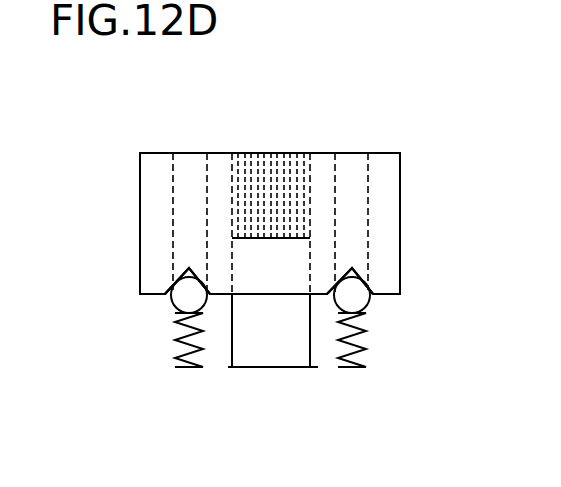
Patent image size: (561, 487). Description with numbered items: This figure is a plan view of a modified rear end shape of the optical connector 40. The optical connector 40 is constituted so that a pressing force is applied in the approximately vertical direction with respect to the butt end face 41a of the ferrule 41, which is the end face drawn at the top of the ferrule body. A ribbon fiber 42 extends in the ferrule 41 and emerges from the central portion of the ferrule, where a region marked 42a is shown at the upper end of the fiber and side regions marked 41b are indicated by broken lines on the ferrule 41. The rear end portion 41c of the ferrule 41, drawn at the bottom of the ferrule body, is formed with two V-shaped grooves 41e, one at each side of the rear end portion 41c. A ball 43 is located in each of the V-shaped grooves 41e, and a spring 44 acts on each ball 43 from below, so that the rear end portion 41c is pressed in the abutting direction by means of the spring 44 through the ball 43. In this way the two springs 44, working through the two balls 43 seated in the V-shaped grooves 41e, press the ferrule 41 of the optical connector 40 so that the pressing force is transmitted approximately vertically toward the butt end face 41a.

The optical connector 40 is at (290, 57).
The ferrule 41 is at (321, 153).
The butt end face 41a is at (207, 153).
The side wall 41b is at (173, 153).
The rear end portion 41c is at (263, 297).
The V-shaped groove 41e is at (167, 290).
The ribbon fiber 42 is at (275, 367).
The serrated portion 42a is at (279, 152).
The ball 43 is at (171, 305).
The spring 44 is at (176, 352).